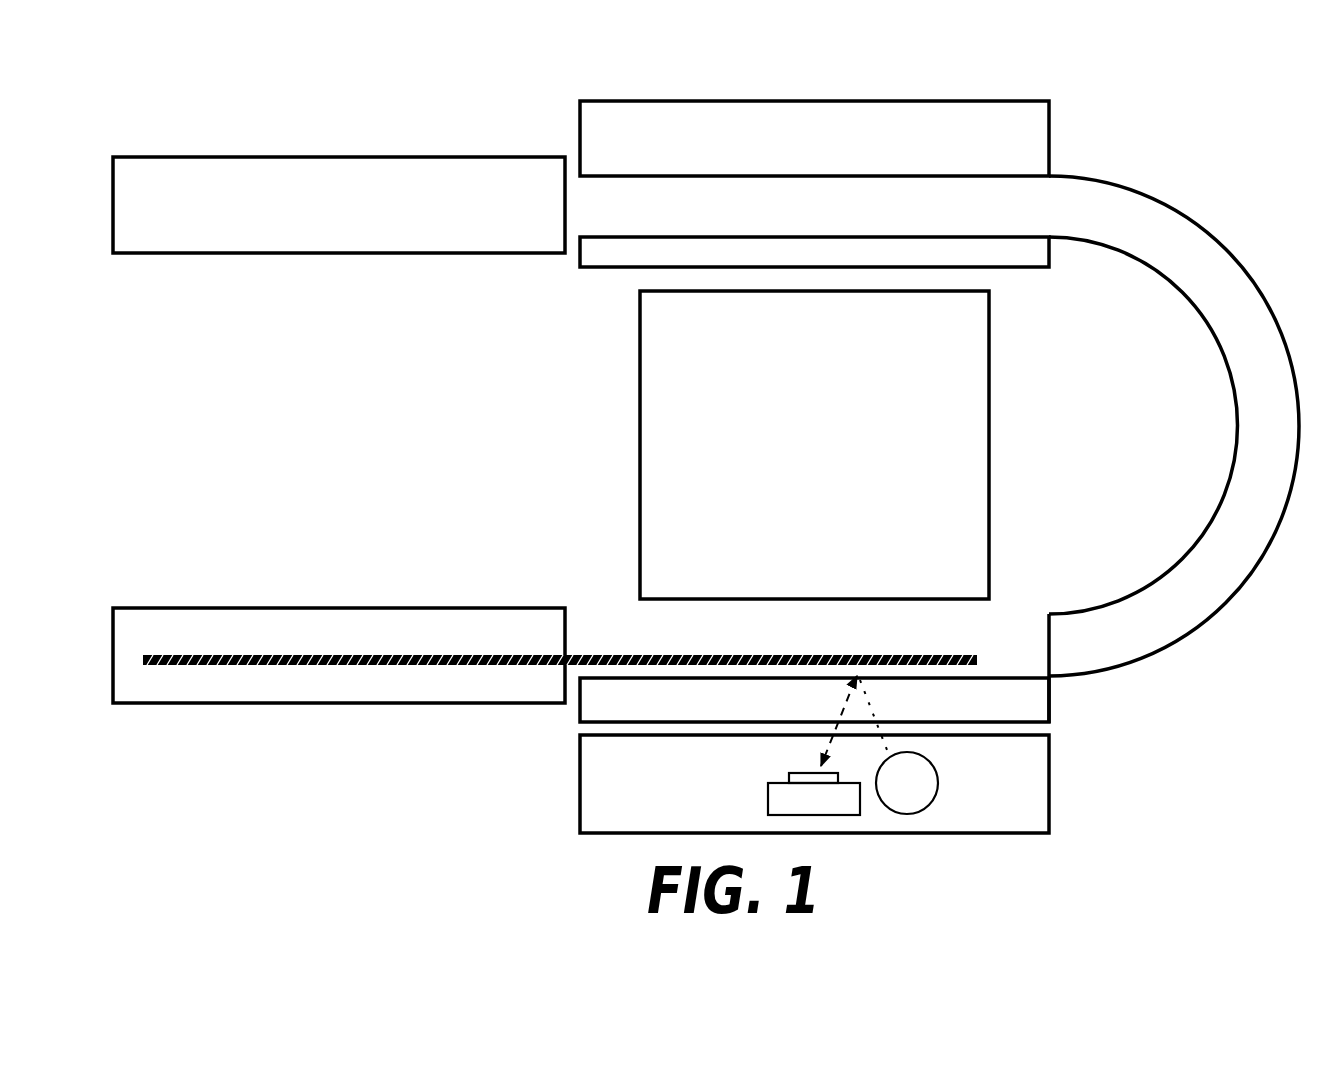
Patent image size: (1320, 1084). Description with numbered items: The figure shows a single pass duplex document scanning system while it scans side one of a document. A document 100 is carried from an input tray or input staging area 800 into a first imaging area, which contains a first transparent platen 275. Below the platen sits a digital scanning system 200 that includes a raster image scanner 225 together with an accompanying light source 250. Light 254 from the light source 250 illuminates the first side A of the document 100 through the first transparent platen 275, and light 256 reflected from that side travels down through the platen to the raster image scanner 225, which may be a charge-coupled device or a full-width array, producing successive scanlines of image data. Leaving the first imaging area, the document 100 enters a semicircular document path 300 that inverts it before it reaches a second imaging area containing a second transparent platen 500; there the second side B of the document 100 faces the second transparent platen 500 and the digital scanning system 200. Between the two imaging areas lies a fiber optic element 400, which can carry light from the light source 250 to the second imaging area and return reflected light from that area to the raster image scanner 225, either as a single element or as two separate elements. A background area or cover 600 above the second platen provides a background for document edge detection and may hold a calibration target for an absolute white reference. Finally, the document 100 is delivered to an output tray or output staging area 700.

The document 100 is at (188, 655).
The digital scanning system 200 is at (693, 797).
The raster image scanner 225 is at (768, 805).
The light source 250 is at (938, 775).
The light 254 is at (872, 712).
The reflected light 256 is at (838, 712).
The first transparent platen 275 is at (580, 712).
The semicircular document path 300 is at (1165, 655).
The fiber optic element 400 is at (638, 385).
The second transparent platen 500 is at (636, 237).
The background area or cover 600 is at (842, 150).
The output tray or output staging area 700 is at (357, 222).
The input tray or input staging area 800 is at (270, 608).
The first side of the document A is at (389, 667).
The second side of the document B is at (389, 654).